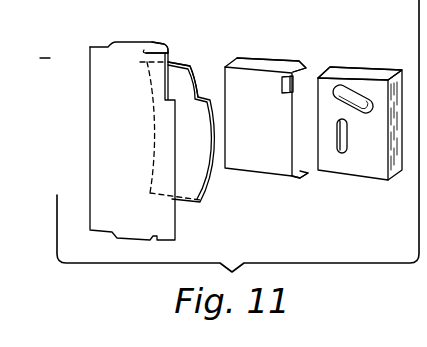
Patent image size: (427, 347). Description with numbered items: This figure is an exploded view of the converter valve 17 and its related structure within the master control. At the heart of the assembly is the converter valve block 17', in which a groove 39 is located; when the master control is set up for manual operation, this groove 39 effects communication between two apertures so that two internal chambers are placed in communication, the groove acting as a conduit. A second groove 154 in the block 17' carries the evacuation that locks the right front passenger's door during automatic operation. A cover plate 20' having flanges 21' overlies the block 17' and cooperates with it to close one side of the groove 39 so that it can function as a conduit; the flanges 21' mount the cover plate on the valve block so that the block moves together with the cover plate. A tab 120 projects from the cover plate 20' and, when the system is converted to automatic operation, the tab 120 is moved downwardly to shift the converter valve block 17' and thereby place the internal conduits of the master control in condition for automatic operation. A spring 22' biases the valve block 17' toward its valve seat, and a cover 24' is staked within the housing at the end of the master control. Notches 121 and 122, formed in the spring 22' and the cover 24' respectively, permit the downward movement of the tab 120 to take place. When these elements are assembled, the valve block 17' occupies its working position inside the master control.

The cover 24' is at (124, 141).
The spring 22' is at (196, 151).
The notch 122 is at (170, 53).
The notch 121 is at (190, 67).
The cover plate 20' is at (266, 140).
The flanges 21' is at (276, 125).
The tab 120 is at (282, 85).
The converter valve block 17' is at (361, 146).
The converter valve 17 is at (360, 55).
The groove 154 is at (357, 88).
The groove 39 is at (335, 148).